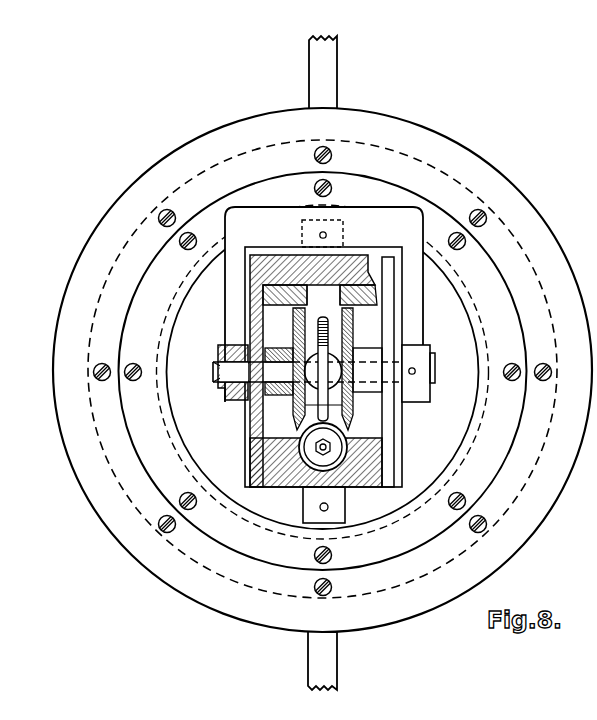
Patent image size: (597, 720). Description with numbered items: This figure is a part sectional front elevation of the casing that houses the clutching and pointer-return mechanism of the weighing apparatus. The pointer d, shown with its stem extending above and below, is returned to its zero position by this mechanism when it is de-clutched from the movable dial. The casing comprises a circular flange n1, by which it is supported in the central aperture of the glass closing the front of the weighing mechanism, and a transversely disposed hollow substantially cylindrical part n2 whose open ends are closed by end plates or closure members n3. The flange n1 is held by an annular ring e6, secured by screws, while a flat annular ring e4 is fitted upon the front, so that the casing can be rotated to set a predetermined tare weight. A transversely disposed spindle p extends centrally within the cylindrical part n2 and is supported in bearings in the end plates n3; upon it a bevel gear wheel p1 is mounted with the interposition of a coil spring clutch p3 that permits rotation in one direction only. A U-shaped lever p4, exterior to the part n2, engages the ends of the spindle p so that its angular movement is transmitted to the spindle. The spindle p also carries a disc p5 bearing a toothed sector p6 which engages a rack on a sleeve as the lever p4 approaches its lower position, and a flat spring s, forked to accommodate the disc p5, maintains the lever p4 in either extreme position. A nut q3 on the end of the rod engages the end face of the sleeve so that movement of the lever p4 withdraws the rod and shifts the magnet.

The flat annular ring e4 is at (286, 126).
The pointer d is at (328, 88).
The annular ring e6 is at (343, 187).
The circular flange n1 is at (445, 443).
The U-shaped lever p4 is at (400, 231).
The hollow substantially cylindrical part n2 is at (298, 265).
The flat spring s is at (323, 297).
The end plates or closure members n3 is at (262, 333).
The nut q3 is at (291, 489).
The spindle p is at (263, 372).
The coil spring clutch p3 is at (294, 413).
The disc p5 is at (330, 411).
The toothed sector p6 is at (329, 328).
The bevel gear wheel p1 is at (333, 409).